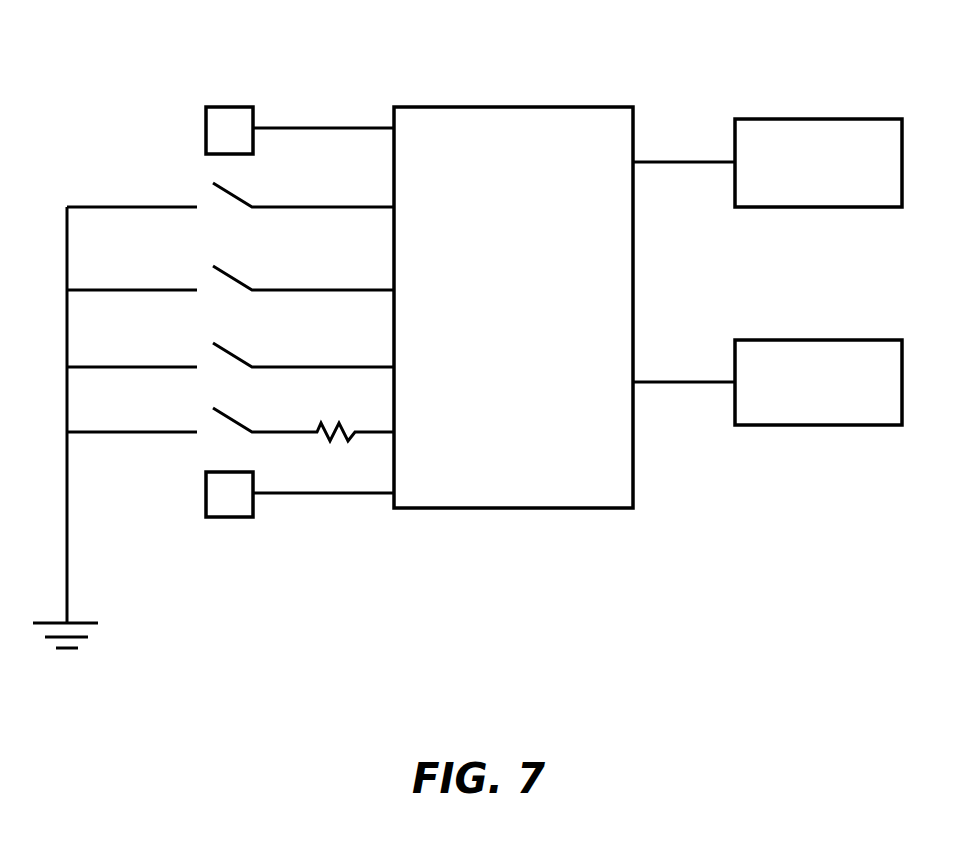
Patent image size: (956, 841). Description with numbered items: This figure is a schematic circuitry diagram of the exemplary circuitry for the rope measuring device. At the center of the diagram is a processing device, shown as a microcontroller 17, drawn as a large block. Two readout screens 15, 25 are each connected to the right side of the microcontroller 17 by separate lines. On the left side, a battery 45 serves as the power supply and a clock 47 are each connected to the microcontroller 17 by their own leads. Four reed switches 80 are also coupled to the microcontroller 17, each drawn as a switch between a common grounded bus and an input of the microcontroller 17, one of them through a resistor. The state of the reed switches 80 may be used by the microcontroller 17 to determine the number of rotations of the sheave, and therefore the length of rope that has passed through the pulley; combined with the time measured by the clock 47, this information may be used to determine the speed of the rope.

The readout screen 15 is at (797, 177).
The microcontroller 17 is at (495, 317).
The readout screen 25 is at (797, 397).
The battery 45 is at (253, 507).
The clock 47 is at (223, 107).
The reed switches 80 is at (230, 323).